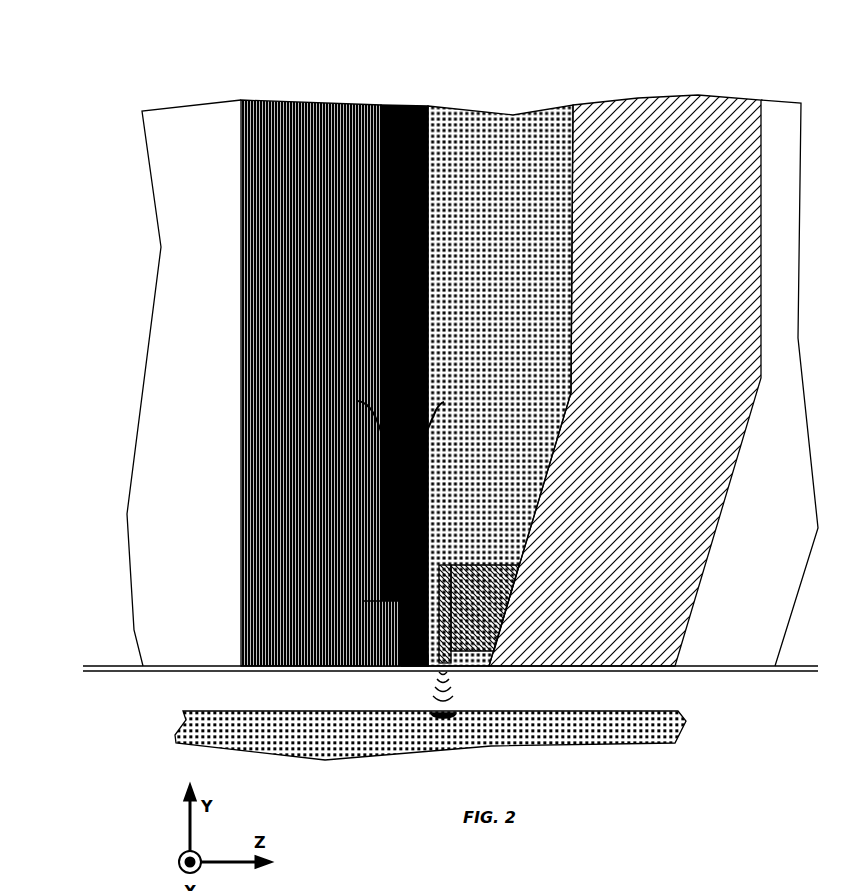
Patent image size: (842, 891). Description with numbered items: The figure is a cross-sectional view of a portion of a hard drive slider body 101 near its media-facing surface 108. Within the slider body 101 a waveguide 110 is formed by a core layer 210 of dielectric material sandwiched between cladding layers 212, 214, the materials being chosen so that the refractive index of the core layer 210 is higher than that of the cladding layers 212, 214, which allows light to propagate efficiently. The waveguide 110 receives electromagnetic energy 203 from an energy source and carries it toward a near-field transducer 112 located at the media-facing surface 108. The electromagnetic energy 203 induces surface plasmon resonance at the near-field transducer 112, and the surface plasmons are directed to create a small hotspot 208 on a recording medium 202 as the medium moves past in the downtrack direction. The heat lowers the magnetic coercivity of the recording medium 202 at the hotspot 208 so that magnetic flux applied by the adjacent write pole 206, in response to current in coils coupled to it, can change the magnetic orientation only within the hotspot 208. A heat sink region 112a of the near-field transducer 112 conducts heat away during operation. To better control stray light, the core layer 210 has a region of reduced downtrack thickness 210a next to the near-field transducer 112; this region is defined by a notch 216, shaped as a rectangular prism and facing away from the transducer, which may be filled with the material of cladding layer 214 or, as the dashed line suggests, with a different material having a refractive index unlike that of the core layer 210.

The slider body 101 is at (170, 38).
The waveguide 110 is at (385, 351).
The cladding layer 214 is at (258, 95).
The core layer 210 is at (393, 97).
The cladding layer 212 is at (500, 368).
The write pole 206 is at (673, 87).
The notch 216 is at (385, 632).
The region of reduced downtrack thickness 210a is at (408, 658).
The heat sink region 112a is at (465, 557).
The electromagnetic energy 203 is at (372, 418).
The media-facing surface 108 is at (720, 663).
The near-field transducer 112 is at (440, 660).
The recording medium 202 is at (225, 725).
The hotspot 208 is at (437, 705).